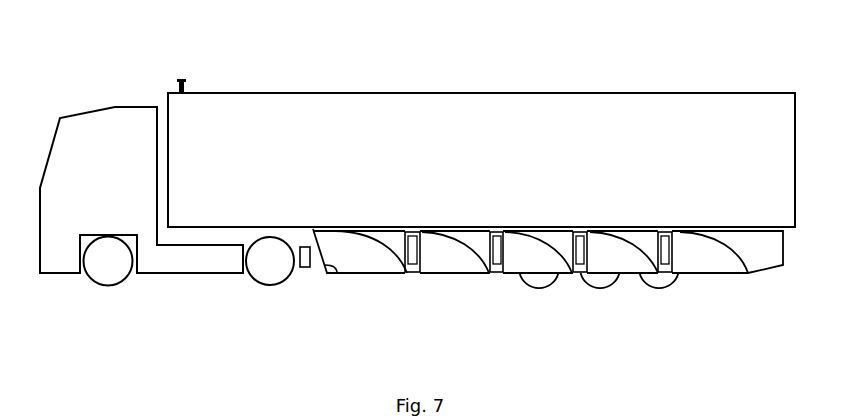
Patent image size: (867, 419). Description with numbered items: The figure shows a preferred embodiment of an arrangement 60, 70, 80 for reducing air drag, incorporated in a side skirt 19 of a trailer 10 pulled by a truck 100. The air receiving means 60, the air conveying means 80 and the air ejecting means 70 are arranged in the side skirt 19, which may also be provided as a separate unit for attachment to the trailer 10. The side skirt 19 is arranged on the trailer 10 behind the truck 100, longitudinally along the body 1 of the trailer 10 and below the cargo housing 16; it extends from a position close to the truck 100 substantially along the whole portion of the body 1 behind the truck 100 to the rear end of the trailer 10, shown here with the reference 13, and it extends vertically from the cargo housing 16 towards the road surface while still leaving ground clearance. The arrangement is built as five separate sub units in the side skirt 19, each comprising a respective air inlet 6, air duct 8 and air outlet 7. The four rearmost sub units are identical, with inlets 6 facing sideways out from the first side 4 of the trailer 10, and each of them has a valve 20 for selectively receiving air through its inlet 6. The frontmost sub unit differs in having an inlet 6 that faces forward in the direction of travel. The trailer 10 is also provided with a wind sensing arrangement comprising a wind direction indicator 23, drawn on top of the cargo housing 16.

The body 1 is at (481, 121).
The trailer 10 is at (481, 121).
The first side 4 is at (594, 174).
The air inlet 6 is at (380, 243).
The air outlet 7 is at (362, 276).
The air duct 8 is at (342, 263).
The rear end 13 is at (684, 307).
The cargo housing 16 is at (741, 223).
The side skirt 19 is at (741, 258).
The valve 20 is at (401, 258).
The wind direction indicator 23 is at (188, 75).
The air receiving means 60 is at (457, 228).
The air ejecting means 70 is at (656, 306).
The air conveying means 80 is at (663, 235).
The truck 100 is at (85, 192).